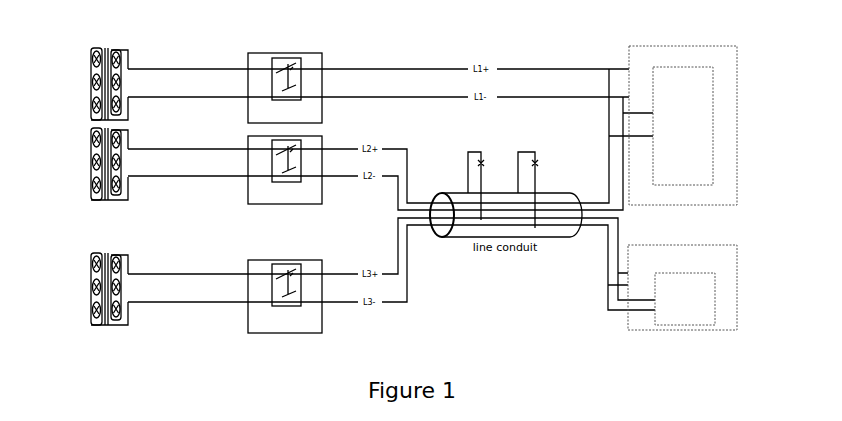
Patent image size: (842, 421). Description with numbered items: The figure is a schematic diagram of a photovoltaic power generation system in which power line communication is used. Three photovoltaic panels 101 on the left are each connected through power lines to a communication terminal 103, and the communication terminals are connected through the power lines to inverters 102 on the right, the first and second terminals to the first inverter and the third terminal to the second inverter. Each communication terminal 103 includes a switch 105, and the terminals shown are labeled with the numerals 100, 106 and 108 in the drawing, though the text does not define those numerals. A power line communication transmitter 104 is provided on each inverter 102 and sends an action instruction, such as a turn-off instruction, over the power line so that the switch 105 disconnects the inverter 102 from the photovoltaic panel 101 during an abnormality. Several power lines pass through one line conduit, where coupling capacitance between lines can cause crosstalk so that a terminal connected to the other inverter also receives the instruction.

The communication terminal 1 100 is at (305, 52).
The photovoltaic panel 101 is at (88, 73).
The inverter 102 is at (737, 105).
The communication terminal 103 is at (303, 259).
The power line communication transmitter 104 is at (713, 168).
The switch 105 is at (322, 134).
The switch of communication terminal 1 106 is at (282, 54).
The switch of communication terminal 2 108 is at (283, 141).